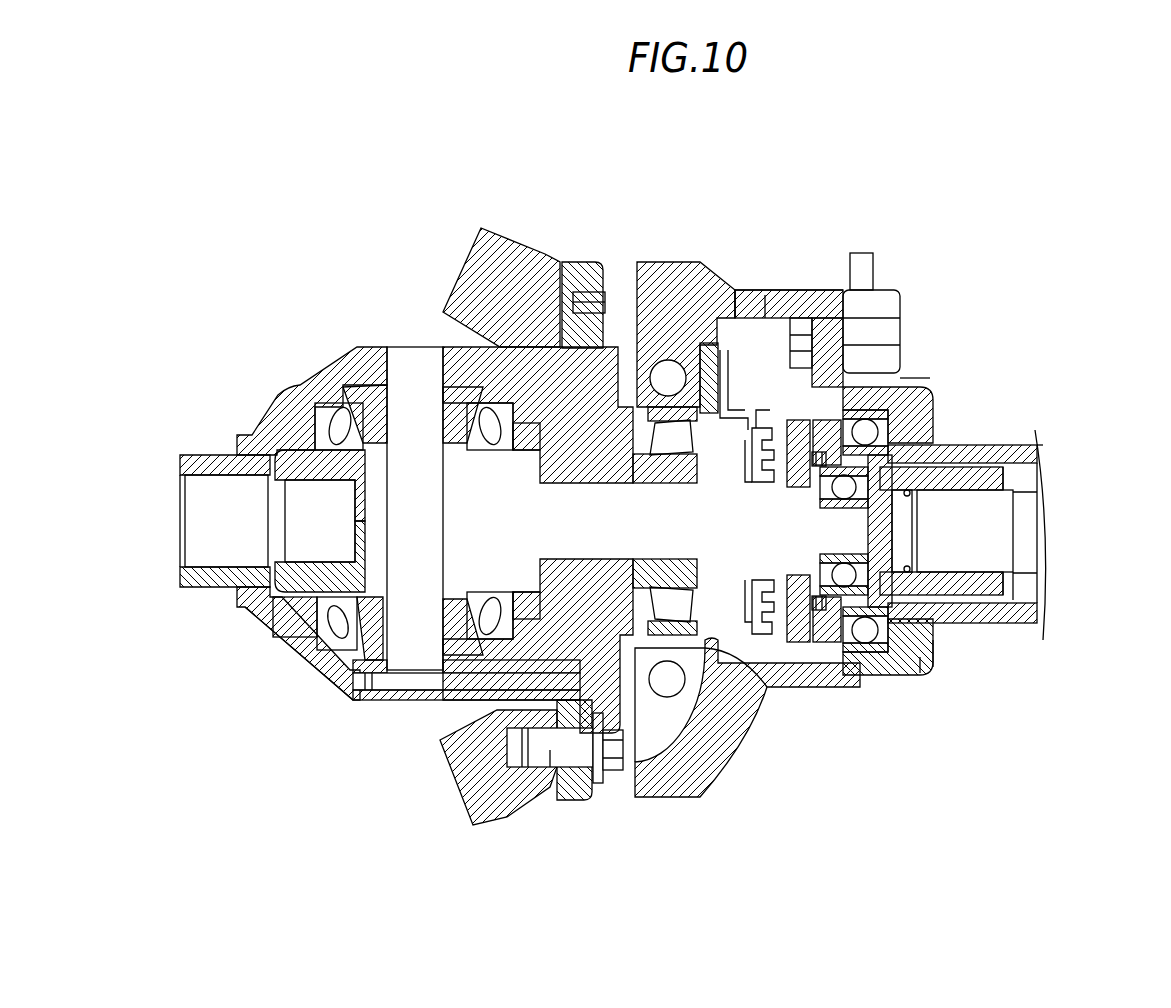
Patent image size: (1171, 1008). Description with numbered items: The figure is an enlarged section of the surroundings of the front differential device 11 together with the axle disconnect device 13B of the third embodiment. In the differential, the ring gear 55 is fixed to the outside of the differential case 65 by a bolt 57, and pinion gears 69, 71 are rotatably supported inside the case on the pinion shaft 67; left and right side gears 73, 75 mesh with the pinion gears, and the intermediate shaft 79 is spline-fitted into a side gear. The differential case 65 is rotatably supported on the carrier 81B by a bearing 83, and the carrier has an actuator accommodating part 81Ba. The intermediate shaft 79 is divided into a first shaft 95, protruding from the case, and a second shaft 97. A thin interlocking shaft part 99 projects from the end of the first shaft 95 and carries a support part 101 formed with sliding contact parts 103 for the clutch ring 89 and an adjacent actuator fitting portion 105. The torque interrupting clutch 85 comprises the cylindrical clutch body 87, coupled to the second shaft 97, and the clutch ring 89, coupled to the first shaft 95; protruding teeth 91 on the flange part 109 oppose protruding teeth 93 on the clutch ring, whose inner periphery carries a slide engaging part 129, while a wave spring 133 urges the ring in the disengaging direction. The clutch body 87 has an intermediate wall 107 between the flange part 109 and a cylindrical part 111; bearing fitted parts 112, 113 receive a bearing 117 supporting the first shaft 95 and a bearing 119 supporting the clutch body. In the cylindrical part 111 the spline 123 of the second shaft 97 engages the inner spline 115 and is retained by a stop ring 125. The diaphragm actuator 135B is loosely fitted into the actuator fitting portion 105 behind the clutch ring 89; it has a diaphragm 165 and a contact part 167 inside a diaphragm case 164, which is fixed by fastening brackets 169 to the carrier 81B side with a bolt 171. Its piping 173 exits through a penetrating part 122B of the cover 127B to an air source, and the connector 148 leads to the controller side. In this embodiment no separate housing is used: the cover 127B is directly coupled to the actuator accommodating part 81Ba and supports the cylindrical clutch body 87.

The front differential device 11 is at (363, 325).
The axle disconnect device 13B is at (927, 305).
The ring gear 55 is at (480, 240).
The bolt 57 is at (548, 797).
The differential case 65 is at (317, 367).
The pinion shaft 67 is at (410, 360).
The pinion gear 69 is at (355, 353).
The pinion gear 71 is at (353, 665).
The side gear 73 is at (317, 613).
The side gear 75 is at (450, 700).
The intermediate shaft 79 is at (1059, 518).
The carrier 81B is at (680, 785).
The actuator accommodating part 81Ba is at (797, 297).
The bearing 83 is at (722, 745).
The torque interrupting clutch 85 is at (808, 300).
The cylindrical clutch body 87 is at (950, 450).
The clutch ring 89 is at (787, 300).
The protruding teeth 91 is at (842, 660).
The protruding teeth 93 is at (808, 645).
The first shaft 95 is at (630, 485).
The second shaft 97 is at (1043, 497).
The interlocking shaft part 99 is at (950, 622).
The support part 101 is at (783, 605).
The sliding contact part 103 is at (750, 295).
The actuator fitting portion 105 is at (755, 582).
The intermediate wall 107 is at (1035, 627).
The flange part 109 is at (930, 378).
The cylindrical part 111 is at (985, 455).
The bearing fitted part 112 is at (902, 493).
The bearing fitted part 113 is at (952, 440).
The inner spline 115 is at (990, 547).
The bearing 117 is at (843, 620).
The bearing 119 is at (877, 650).
The penetrating part 122B is at (830, 300).
The spline 123 is at (1030, 590).
The stop ring 125 is at (977, 622).
The cover 127B is at (923, 660).
The slide engaging part 129 is at (786, 597).
The wave spring 133 is at (813, 598).
The diaphragm actuator 135B is at (768, 297).
The connector 148 is at (905, 340).
The diaphragm case 164 is at (750, 453).
The diaphragm 165 is at (710, 483).
The contact part 167 is at (780, 455).
The bracket 169 is at (735, 290).
The bolt 171 is at (702, 300).
The piping 173 is at (660, 480).